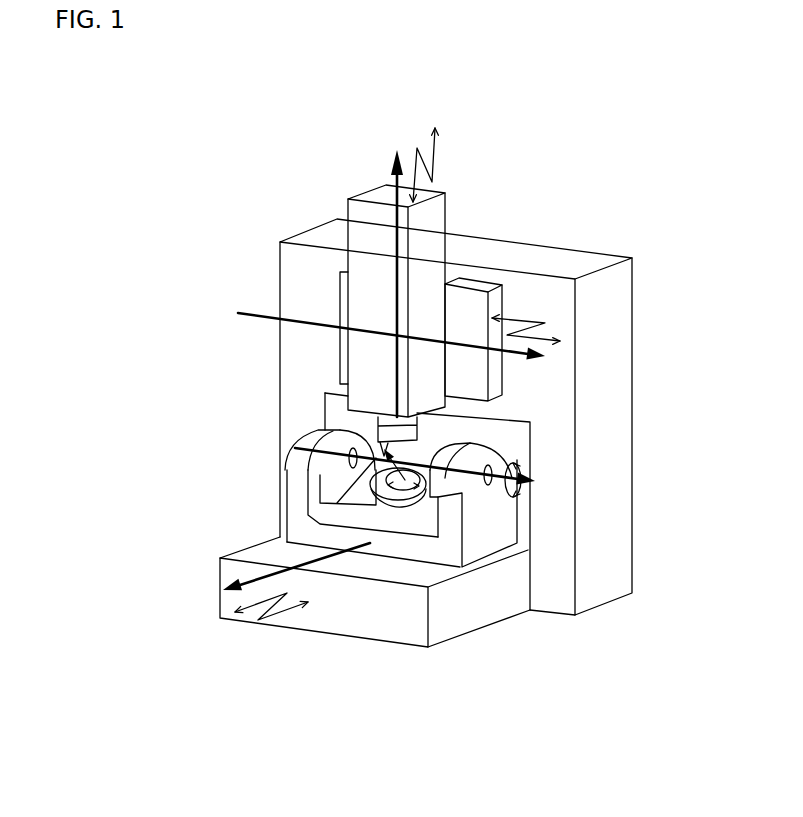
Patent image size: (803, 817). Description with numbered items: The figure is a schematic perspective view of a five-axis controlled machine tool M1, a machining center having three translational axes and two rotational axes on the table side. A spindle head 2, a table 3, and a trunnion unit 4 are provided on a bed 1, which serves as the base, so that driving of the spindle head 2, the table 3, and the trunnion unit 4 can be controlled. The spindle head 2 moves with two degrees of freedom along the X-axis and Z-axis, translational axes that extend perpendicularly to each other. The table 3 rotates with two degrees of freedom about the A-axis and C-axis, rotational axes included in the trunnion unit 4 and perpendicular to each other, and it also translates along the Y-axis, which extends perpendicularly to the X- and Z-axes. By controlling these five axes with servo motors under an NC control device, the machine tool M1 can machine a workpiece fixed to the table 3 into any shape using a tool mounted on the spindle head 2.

The machine tool M1 is at (577, 153).
The bed 1 is at (470, 608).
The spindle head 2 is at (382, 428).
The table 3 is at (382, 488).
The trunnion unit 4 is at (497, 510).